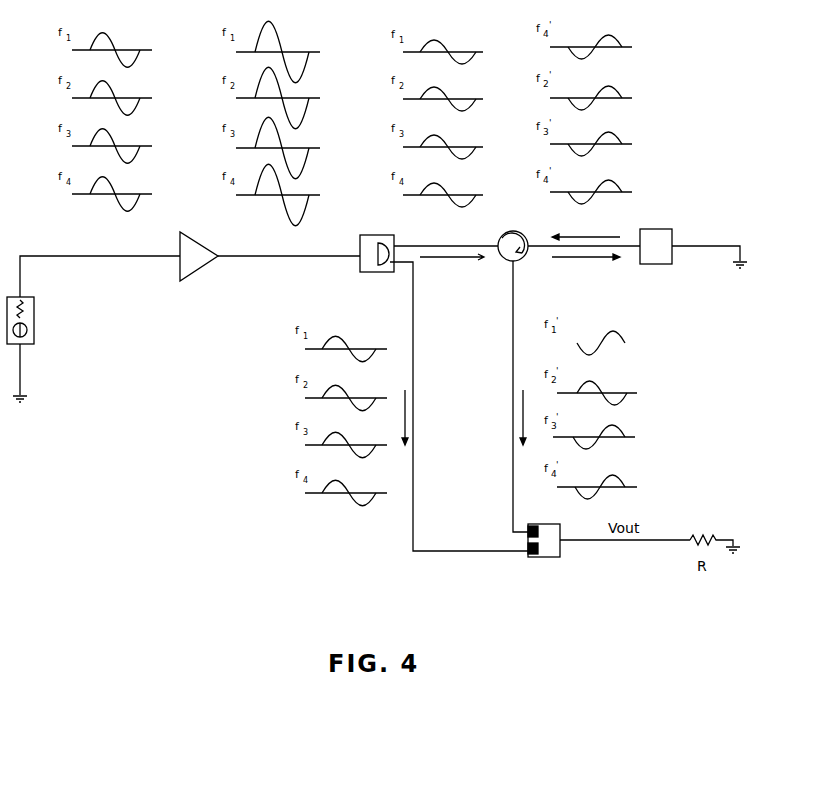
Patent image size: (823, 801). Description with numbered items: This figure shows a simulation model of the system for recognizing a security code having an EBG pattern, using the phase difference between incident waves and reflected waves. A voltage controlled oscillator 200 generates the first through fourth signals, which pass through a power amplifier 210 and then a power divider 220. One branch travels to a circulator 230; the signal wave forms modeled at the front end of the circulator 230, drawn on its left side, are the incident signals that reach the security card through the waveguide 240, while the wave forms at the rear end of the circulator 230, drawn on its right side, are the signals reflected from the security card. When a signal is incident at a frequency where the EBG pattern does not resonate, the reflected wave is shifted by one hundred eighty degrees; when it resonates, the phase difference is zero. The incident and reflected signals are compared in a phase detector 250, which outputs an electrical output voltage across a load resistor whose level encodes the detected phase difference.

The voltage controlled oscillator 200 is at (35, 328).
The power amplifier 210 is at (180, 270).
The power divider 220 is at (360, 268).
The circulator 230 is at (524, 258).
The waveguide 240 is at (660, 229).
The phase detector 250 is at (545, 558).